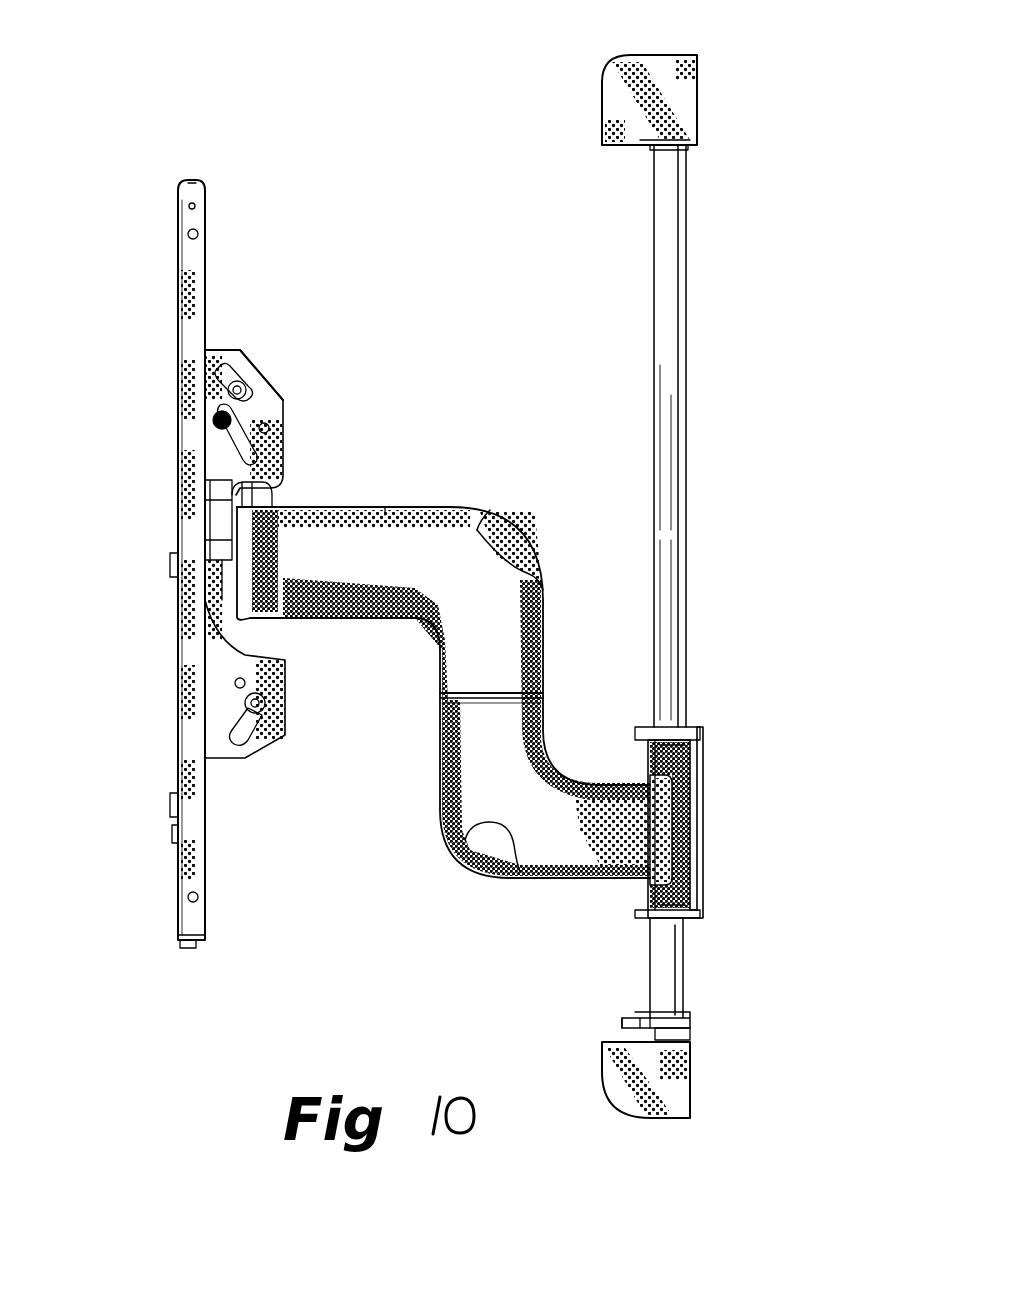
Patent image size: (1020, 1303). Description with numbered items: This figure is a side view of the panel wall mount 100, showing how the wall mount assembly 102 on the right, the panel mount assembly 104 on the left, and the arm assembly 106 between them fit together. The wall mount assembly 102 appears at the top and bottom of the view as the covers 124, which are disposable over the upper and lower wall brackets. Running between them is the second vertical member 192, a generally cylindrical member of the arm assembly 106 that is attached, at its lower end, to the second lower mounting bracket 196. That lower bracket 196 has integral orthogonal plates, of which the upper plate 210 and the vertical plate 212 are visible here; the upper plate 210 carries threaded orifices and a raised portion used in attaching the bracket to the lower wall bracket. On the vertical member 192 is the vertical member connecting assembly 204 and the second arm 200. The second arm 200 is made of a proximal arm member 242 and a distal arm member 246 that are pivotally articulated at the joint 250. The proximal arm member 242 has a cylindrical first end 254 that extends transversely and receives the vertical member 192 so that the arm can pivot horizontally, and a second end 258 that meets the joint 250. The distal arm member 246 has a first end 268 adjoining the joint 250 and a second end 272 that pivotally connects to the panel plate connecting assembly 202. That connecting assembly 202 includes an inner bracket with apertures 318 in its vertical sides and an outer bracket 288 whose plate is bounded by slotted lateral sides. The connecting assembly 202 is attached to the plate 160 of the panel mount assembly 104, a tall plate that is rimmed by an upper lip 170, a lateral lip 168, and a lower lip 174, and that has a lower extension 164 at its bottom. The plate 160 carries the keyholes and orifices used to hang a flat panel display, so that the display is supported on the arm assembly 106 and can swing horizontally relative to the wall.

The panel wall mount 100 is at (790, 426).
The wall mount assembly 102 is at (700, 112).
The panel mount assembly 104 is at (176, 293).
The arm assembly 106 is at (444, 512).
The covers 124 is at (660, 70).
The plate 160 is at (178, 348).
The second lower extension 164 is at (178, 926).
The lateral lip 168 is at (190, 825).
The upper lip 170 is at (194, 180).
The lower lip 174 is at (195, 950).
The second vertical member 192 is at (676, 342).
The second lower mounting bracket 196 is at (694, 1028).
The second arm 200 is at (545, 592).
The panel plate connecting assembly 202 is at (270, 376).
The vertical member connecting assembly 204 is at (705, 751).
The upper plate 210 is at (626, 1020).
The vertical plate 212 is at (692, 1034).
The proximal arm member 242 is at (495, 868).
The distal arm member 246 is at (384, 512).
The joint 250 is at (538, 698).
The first end 254 is at (652, 896).
The second end 258 is at (487, 708).
The first end 268 is at (490, 678).
The second end 272 is at (286, 508).
The outer bracket 288 is at (233, 346).
The aperture 318 is at (285, 412).